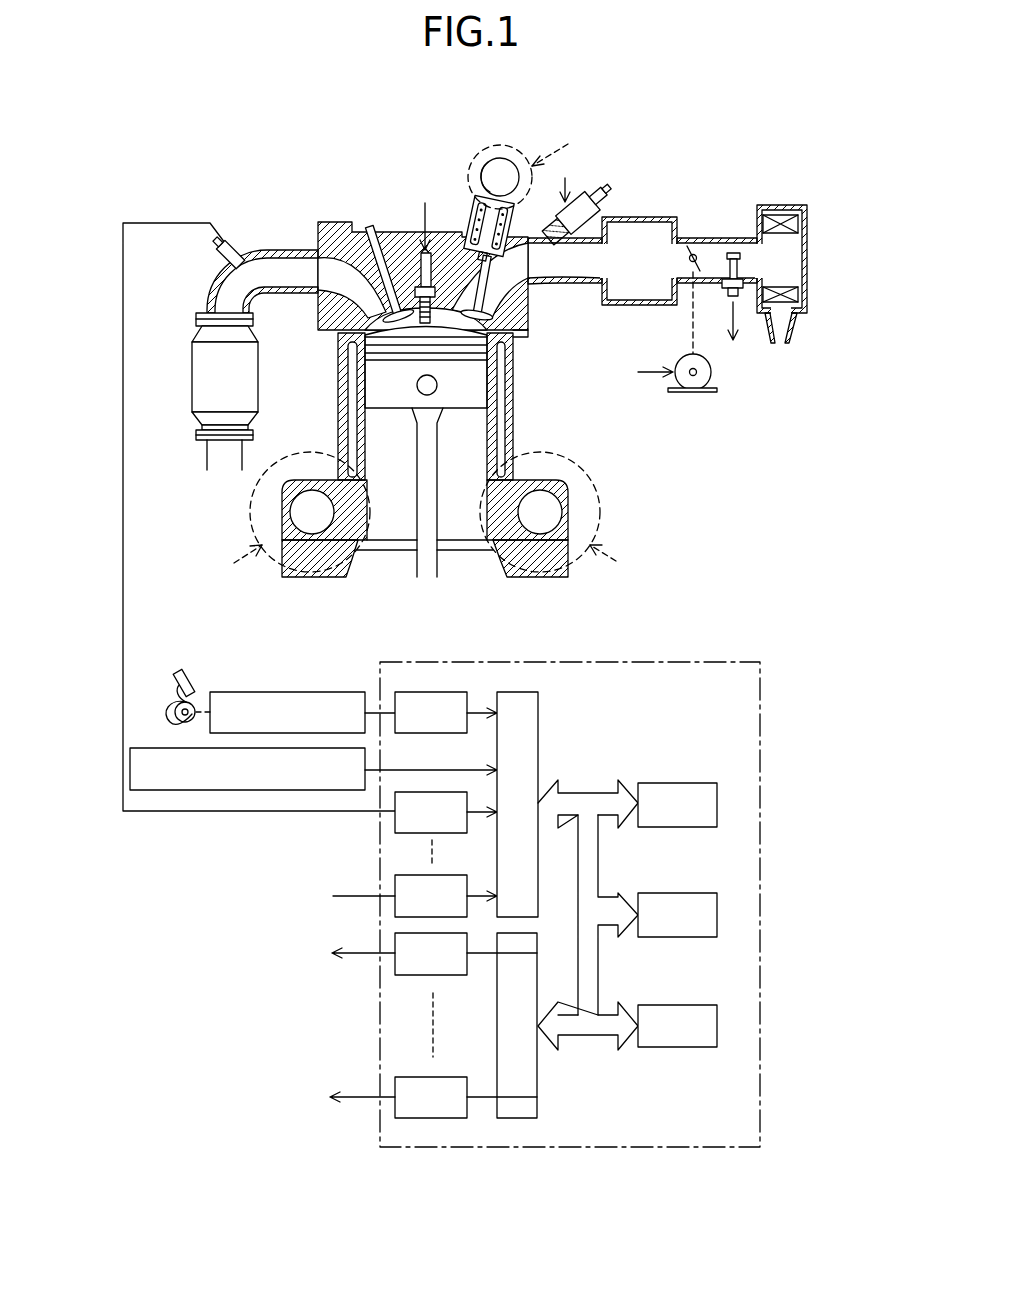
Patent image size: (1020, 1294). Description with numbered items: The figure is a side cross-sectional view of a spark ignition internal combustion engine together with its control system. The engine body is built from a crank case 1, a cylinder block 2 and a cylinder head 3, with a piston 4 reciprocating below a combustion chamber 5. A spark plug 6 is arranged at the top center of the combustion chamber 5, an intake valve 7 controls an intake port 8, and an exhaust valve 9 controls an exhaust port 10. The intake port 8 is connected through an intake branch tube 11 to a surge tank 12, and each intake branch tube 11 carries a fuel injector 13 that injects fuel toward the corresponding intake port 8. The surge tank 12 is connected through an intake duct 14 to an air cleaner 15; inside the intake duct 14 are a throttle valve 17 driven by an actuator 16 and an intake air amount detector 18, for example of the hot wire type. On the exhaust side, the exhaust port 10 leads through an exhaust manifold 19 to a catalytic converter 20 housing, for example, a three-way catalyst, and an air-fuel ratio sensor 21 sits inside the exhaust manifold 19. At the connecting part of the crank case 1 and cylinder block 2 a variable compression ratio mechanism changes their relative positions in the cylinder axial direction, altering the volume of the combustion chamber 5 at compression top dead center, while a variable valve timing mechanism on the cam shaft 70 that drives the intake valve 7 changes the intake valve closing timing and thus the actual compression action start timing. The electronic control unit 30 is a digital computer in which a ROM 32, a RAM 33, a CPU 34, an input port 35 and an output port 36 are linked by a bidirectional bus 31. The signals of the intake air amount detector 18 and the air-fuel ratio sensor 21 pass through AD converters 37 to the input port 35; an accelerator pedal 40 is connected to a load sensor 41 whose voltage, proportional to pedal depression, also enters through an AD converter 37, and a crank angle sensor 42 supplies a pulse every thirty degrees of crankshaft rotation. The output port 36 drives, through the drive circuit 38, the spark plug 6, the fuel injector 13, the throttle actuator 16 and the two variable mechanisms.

The crank case 1 is at (532, 555).
The cylinder block 2 is at (510, 403).
The cylinder head 3 is at (528, 325).
The piston 4 is at (377, 383).
The combustion chamber 5 is at (410, 330).
The spark plug 6 is at (420, 252).
The intake valve 7 is at (462, 327).
The intake port 8 is at (535, 300).
The exhaust valve 9 is at (365, 328).
The exhaust port 10 is at (330, 305).
The intake branch tube 11 is at (587, 237).
The surge tank 12 is at (655, 217).
The fuel injector 13 is at (578, 207).
The intake duct 14 is at (718, 238).
The air cleaner 15 is at (785, 205).
The actuator 16 is at (678, 382).
The throttle valve 17 is at (690, 276).
The intake air amount detector 18 is at (740, 263).
The exhaust manifold 19 is at (270, 250).
The catalytic converter 20 is at (205, 372).
The air-fuel ratio sensor 21 is at (223, 262).
The electronic control unit 30 is at (765, 708).
The bidirectional bus 31 is at (590, 793).
The ROM 32 is at (672, 783).
The RAM 33 is at (672, 893).
The CPU 34 is at (672, 1005).
The input port 35 is at (538, 712).
The output port 36 is at (537, 1093).
The AD converter 37 is at (420, 692).
The drive circuit 38 is at (410, 1077).
The accelerator pedal 40 is at (186, 688).
The load sensor 41 is at (290, 692).
The crank angle sensor 42 is at (160, 748).
The cam shaft 70 is at (498, 172).